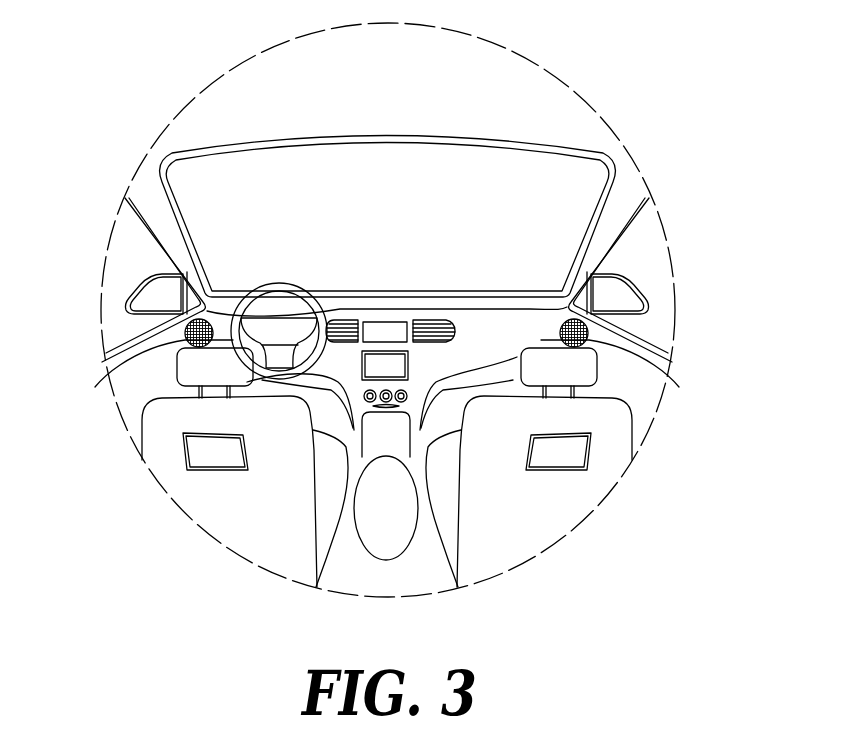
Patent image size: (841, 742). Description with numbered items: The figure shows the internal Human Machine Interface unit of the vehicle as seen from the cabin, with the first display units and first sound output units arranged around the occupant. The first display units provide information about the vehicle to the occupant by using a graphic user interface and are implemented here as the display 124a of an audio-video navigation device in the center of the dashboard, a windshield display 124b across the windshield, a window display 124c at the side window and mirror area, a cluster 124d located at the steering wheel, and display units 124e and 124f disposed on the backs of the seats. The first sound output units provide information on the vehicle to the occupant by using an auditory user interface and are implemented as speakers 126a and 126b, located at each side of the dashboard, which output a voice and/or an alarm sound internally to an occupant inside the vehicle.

The display of an audio-video navigation (AVN) device 124a is at (384, 360).
The windshield display 124b is at (303, 152).
The window display 124c is at (110, 290).
The cluster 124d is at (303, 312).
The display unit 124e is at (195, 460).
The display unit 124f is at (578, 460).
The speaker 126a is at (137, 363).
The speaker 126b is at (650, 373).